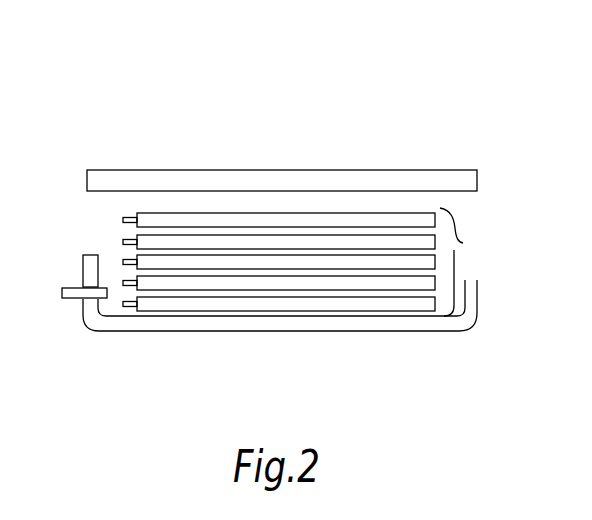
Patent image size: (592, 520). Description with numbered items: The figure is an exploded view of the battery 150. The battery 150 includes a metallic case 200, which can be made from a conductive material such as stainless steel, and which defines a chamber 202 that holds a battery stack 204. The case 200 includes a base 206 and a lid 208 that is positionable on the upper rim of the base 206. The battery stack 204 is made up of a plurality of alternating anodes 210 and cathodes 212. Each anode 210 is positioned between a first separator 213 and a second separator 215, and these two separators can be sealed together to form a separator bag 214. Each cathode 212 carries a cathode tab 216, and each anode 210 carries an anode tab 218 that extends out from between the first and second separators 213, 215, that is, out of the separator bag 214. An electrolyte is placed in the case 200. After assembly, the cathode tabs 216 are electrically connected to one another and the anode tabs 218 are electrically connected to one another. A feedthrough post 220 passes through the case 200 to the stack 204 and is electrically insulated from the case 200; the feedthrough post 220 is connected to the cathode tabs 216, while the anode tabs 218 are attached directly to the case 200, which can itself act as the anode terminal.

The battery 150 is at (480, 60).
The metallic case 200 is at (477, 288).
The chamber 202 is at (458, 280).
The battery stack 204 is at (463, 243).
The base 206 is at (392, 333).
The lid 208 is at (310, 171).
The anode 210 is at (248, 240).
The cathode 212 is at (148, 213).
The first separator 213 is at (397, 235).
The separator bag 214 is at (338, 235).
The second separator 215 is at (409, 248).
The cathode tab 216 is at (126, 220).
The anode tab 218 is at (125, 244).
The feedthrough post 220 is at (70, 299).